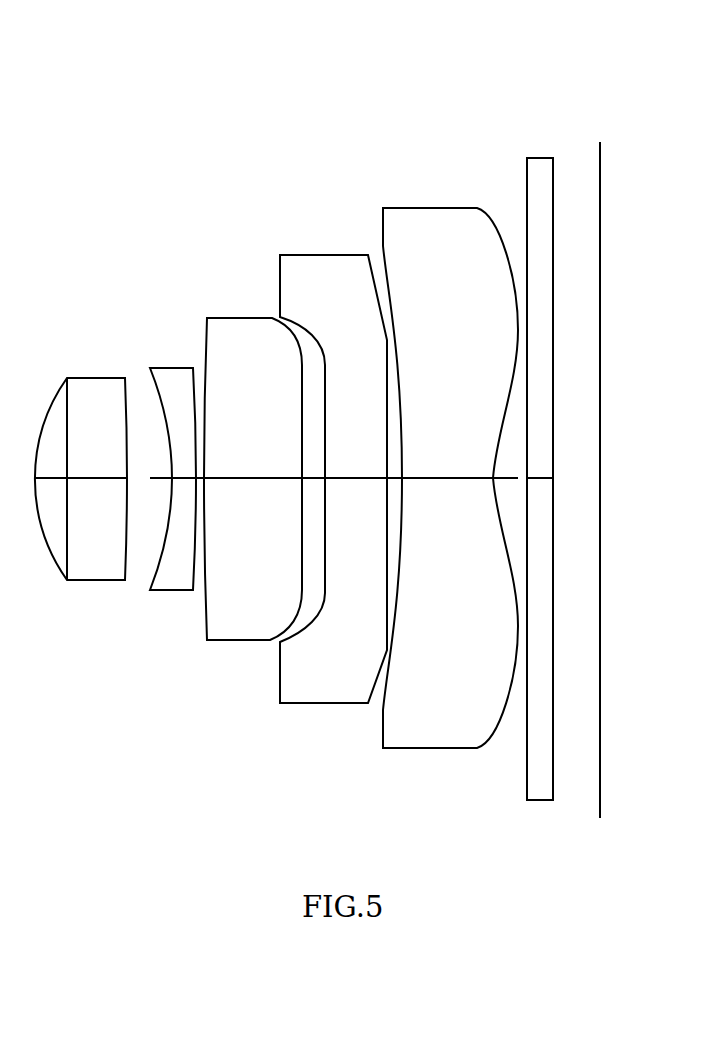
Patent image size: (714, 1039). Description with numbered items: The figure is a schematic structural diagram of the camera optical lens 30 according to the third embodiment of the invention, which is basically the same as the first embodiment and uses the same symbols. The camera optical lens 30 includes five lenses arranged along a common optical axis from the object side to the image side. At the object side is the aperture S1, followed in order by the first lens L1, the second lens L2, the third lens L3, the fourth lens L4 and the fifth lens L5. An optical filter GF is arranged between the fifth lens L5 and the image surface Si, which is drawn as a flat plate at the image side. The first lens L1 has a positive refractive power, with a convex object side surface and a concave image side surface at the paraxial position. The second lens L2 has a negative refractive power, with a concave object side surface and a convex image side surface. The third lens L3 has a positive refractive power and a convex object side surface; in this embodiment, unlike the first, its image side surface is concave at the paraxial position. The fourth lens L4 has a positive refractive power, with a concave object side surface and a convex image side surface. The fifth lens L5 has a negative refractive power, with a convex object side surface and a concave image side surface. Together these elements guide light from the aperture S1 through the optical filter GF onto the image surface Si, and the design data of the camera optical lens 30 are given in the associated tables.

The camera optical lens 30 is at (343, 52).
The aperture S1 is at (64, 466).
The first lens L1 is at (81, 466).
The second lens L2 is at (173, 466).
The third lens L3 is at (253, 466).
The fourth lens L4 is at (333, 466).
The fifth lens L5 is at (450, 464).
The optical filter GF is at (539, 467).
The image surface Si is at (599, 467).